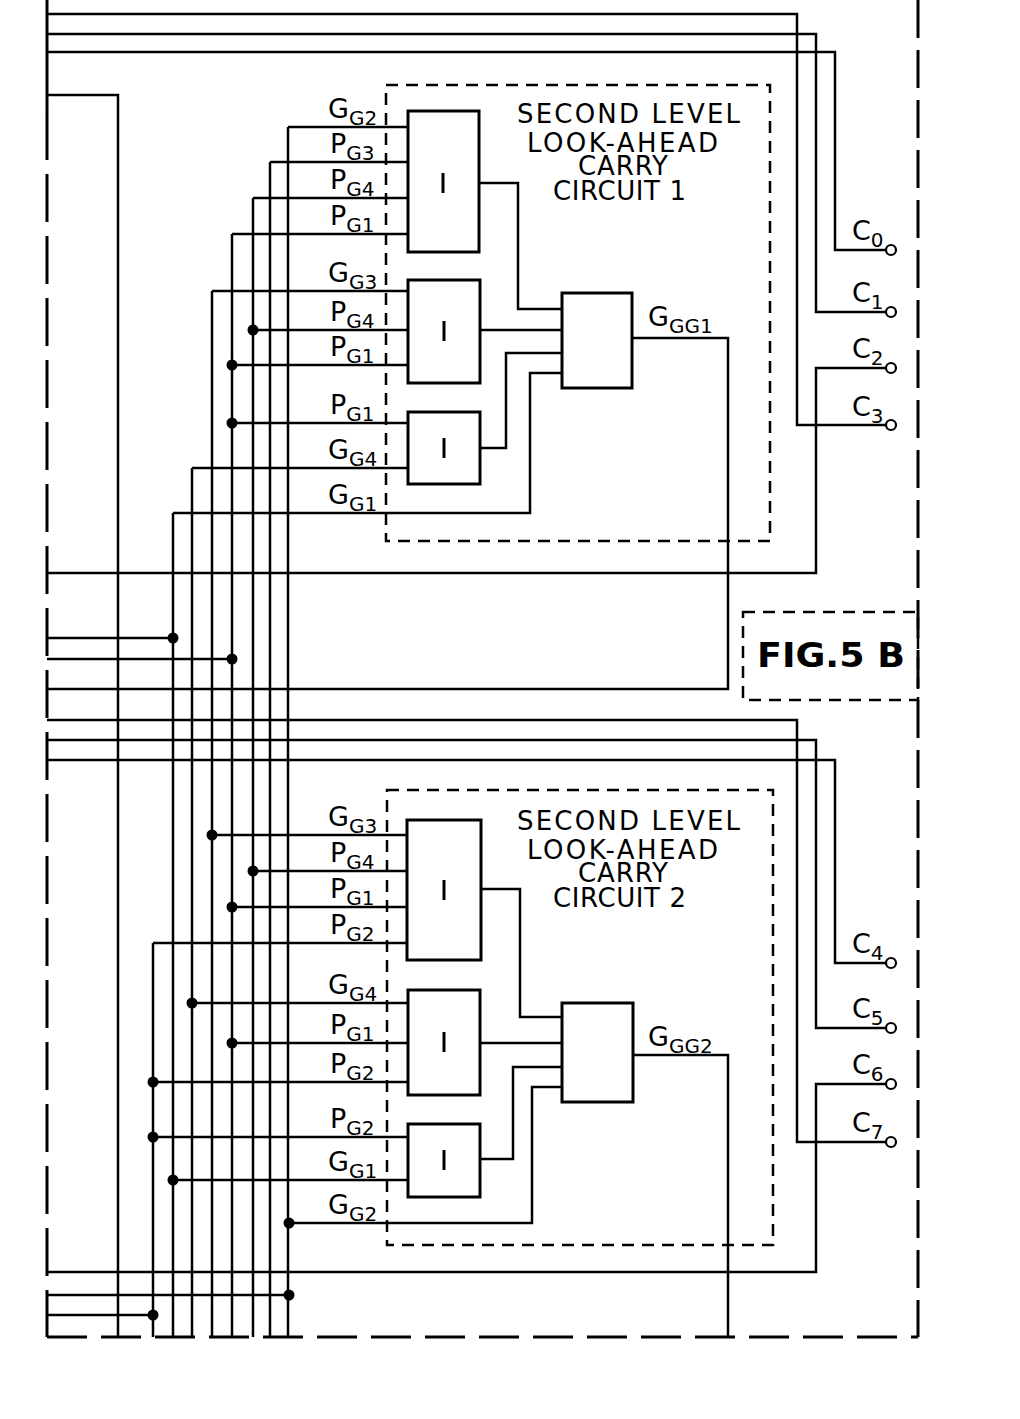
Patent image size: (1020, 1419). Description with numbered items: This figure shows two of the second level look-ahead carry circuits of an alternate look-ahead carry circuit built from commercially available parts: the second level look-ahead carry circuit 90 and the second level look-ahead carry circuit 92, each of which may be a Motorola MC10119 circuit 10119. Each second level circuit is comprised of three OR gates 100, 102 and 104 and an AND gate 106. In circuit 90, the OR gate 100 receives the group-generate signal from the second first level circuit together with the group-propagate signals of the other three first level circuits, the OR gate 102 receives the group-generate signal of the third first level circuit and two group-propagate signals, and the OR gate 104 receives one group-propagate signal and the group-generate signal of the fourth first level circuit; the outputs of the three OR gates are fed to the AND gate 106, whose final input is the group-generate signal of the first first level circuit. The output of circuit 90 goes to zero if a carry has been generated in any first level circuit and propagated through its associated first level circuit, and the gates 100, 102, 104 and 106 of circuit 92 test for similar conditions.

The second level look-ahead carry circuit 90 is at (593, 540).
The second level look-ahead carry circuit 92 is at (502, 778).
The OR gate 100 is at (480, 217).
The OR gate 102 is at (480, 292).
The OR gate 104 is at (480, 472).
The AND gate 106 is at (620, 389).
The Motorola MC10119 circuit 10119 is at (658, 875).